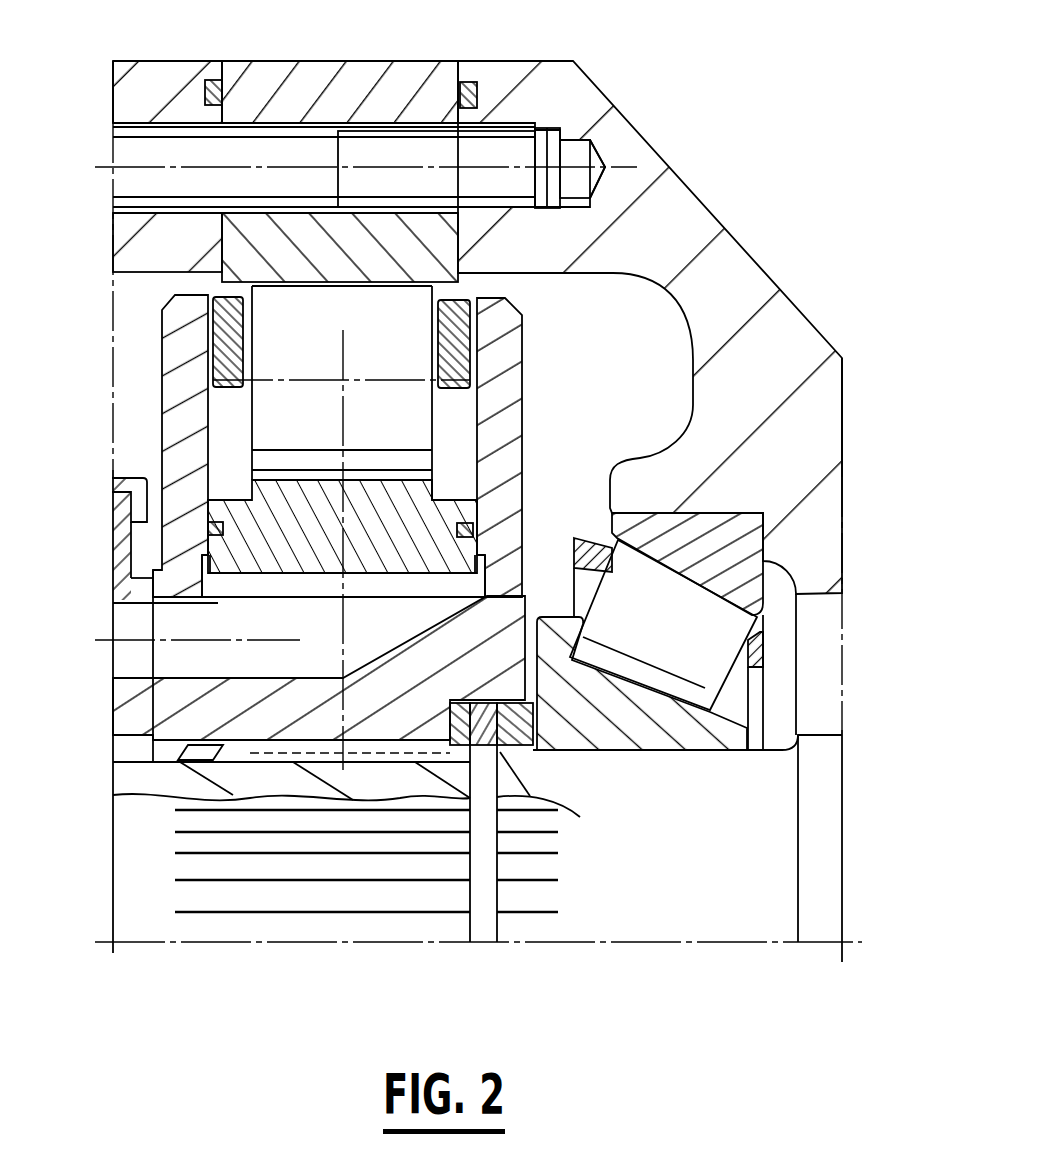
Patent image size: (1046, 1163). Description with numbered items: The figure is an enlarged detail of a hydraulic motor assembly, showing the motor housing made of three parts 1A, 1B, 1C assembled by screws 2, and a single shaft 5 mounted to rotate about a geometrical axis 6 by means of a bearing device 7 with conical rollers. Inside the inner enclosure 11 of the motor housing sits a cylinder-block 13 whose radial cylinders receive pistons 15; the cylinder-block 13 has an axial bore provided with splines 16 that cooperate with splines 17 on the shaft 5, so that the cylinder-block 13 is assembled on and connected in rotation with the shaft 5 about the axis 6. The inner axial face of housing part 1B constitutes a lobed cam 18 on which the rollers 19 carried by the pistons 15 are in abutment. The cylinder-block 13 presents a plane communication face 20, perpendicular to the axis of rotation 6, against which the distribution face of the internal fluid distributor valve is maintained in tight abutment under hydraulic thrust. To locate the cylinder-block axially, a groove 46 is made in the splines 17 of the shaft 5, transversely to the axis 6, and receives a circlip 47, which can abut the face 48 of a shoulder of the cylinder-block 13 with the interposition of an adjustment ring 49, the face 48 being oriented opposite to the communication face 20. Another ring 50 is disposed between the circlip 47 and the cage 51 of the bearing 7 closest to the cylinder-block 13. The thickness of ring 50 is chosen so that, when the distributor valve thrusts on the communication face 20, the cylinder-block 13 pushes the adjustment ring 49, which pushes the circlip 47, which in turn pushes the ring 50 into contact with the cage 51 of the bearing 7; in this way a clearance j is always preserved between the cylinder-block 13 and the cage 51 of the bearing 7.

The motor housing part 1A is at (665, 192).
The motor housing part 1B is at (285, 78).
The motor housing part 1C is at (160, 78).
The screws 2 is at (477, 155).
The shaft 5 is at (690, 850).
The geometrical axis 6 is at (697, 942).
The bearing device 7 is at (708, 610).
The inner enclosure 11 is at (605, 342).
The cylinder-block 13 is at (512, 430).
The pistons 15 is at (382, 493).
The splines 16 is at (218, 746).
The splines 17 is at (183, 854).
The lobed cam 18 is at (360, 300).
The rollers 19 is at (305, 425).
The communication face 20 is at (153, 592).
The groove 46 is at (481, 745).
The circlip 47 is at (485, 845).
The face of shoulder 48 is at (456, 706).
The adjustment ring 49 is at (447, 730).
The ring 50 is at (513, 727).
The cage 51 is at (720, 735).
The clearance j is at (570, 632).